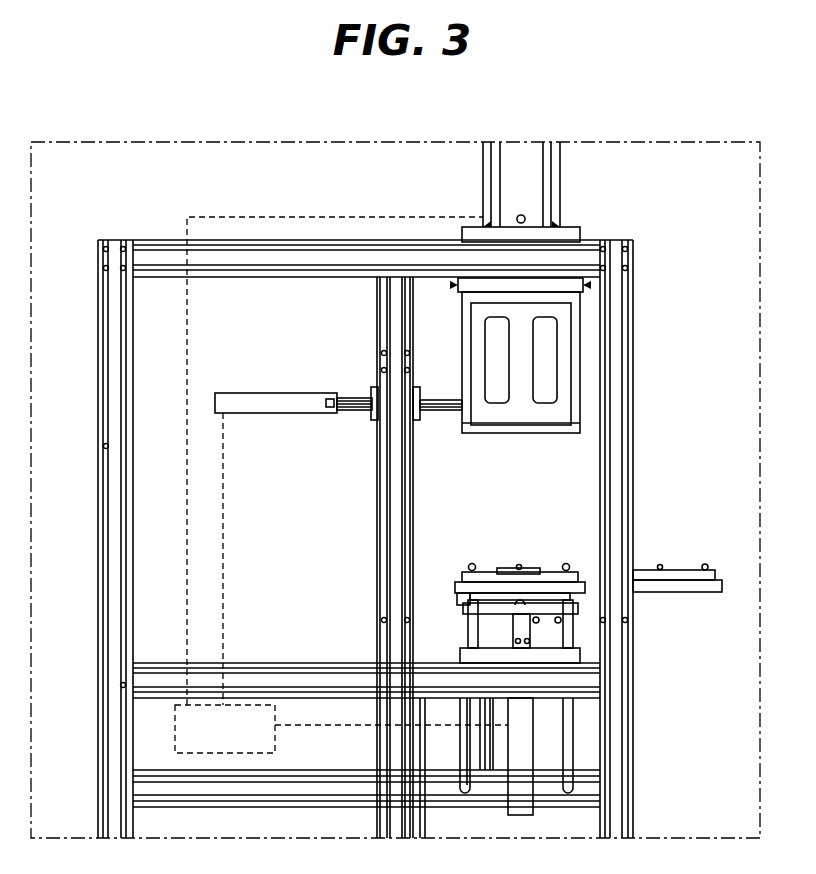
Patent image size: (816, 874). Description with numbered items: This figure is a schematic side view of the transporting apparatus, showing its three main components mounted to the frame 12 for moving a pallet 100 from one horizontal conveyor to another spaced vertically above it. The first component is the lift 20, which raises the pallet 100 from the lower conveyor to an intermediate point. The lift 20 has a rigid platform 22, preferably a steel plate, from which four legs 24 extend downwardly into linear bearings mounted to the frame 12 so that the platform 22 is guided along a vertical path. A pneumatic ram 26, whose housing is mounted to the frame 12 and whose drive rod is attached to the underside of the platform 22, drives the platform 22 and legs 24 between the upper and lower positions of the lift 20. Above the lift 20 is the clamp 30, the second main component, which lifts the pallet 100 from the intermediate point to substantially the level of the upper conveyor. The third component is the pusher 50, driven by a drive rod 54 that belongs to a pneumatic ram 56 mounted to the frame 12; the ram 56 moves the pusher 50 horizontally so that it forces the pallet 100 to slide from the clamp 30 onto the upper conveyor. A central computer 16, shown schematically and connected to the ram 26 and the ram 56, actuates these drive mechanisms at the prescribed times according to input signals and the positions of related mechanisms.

The frame 12 is at (612, 413).
The central computer 16 is at (341, 485).
The lift 20 is at (442, 597).
The platform 22 is at (578, 606).
The legs 24 is at (468, 632).
The pneumatic ram 26 is at (526, 806).
The clamp 30 is at (513, 444).
The pusher 50 is at (296, 425).
The drive rod 54 is at (437, 415).
The pneumatic ram 56 is at (282, 403).
The pallet 100 is at (552, 572).